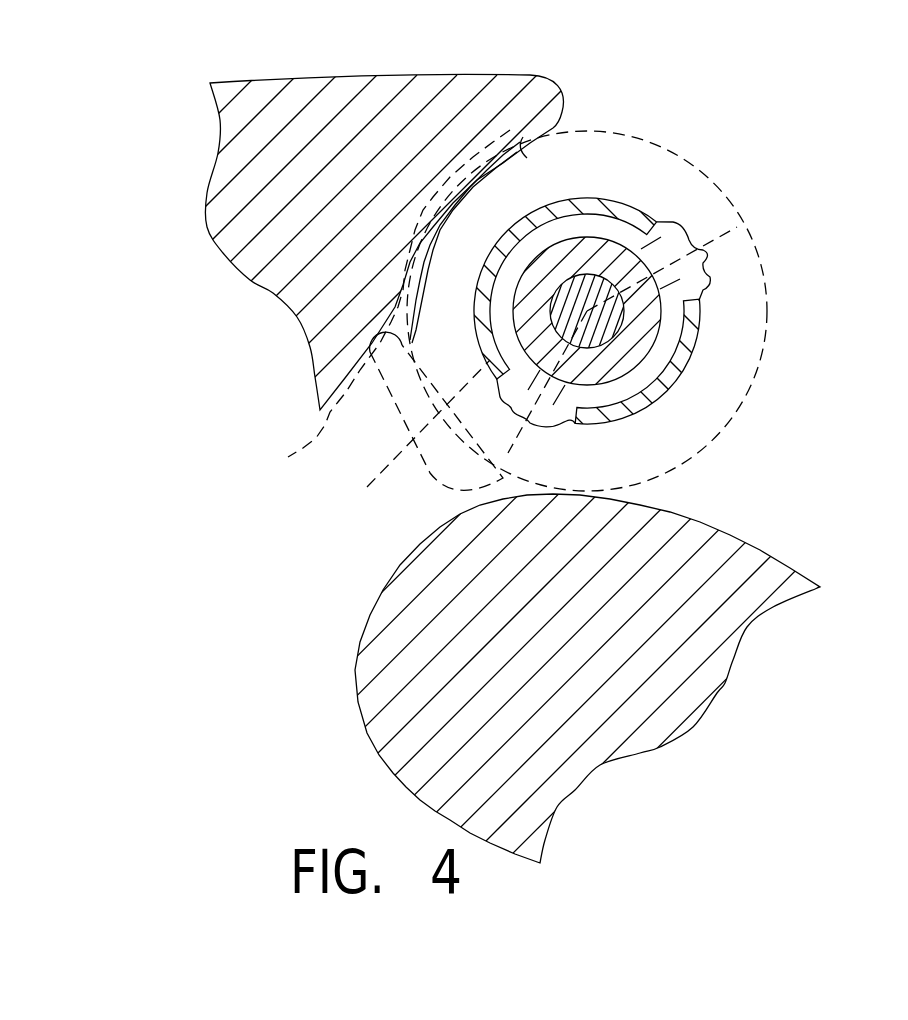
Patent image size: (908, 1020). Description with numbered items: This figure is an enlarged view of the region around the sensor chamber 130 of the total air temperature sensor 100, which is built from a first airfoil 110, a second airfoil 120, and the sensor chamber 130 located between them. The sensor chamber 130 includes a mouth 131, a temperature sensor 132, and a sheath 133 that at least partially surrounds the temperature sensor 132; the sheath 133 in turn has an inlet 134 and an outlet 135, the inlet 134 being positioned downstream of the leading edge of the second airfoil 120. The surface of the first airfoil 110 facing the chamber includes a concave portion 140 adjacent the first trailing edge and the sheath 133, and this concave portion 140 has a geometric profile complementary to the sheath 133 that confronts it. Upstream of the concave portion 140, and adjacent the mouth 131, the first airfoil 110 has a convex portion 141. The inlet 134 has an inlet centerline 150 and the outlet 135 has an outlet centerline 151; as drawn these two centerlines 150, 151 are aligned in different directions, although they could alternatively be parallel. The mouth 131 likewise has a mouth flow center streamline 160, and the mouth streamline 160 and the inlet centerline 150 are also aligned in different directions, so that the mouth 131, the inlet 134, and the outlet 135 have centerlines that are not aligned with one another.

The total air temperature sensor 100 is at (90, 398).
The first airfoil 110 is at (288, 103).
The second airfoil 120 is at (688, 693).
The sensor chamber 130 is at (700, 133).
The mouth 131 is at (436, 492).
The temperature sensor 132 is at (630, 333).
The sheath 133 is at (652, 385).
The inlet 134 is at (500, 398).
The outlet 135 is at (708, 249).
The concave portion 140 is at (563, 147).
The convex portion 141 is at (302, 453).
The inlet centerline 150 is at (507, 446).
The outlet centerline 151 is at (735, 228).
The mouth flow center streamline 160 is at (367, 487).